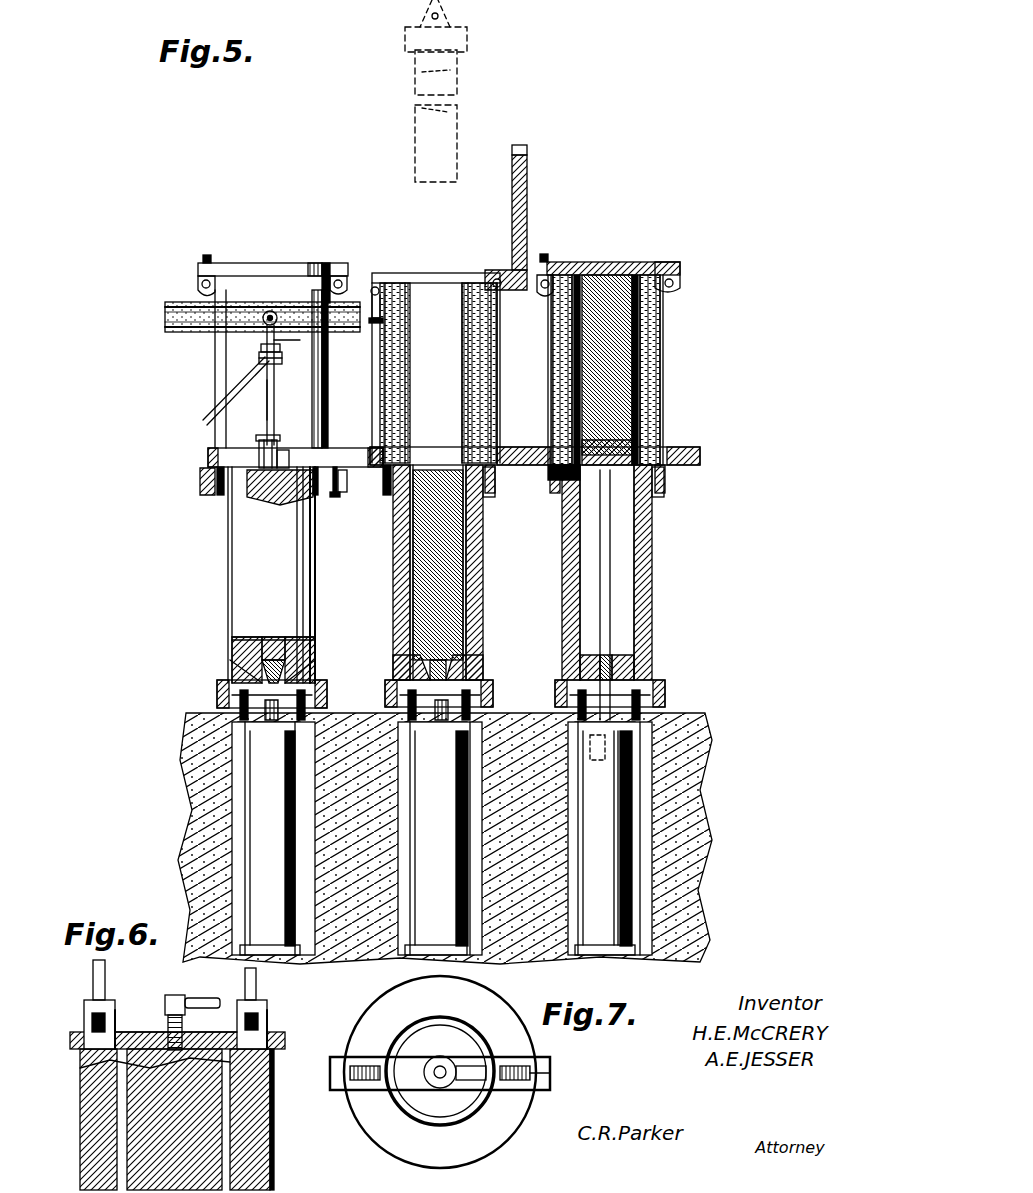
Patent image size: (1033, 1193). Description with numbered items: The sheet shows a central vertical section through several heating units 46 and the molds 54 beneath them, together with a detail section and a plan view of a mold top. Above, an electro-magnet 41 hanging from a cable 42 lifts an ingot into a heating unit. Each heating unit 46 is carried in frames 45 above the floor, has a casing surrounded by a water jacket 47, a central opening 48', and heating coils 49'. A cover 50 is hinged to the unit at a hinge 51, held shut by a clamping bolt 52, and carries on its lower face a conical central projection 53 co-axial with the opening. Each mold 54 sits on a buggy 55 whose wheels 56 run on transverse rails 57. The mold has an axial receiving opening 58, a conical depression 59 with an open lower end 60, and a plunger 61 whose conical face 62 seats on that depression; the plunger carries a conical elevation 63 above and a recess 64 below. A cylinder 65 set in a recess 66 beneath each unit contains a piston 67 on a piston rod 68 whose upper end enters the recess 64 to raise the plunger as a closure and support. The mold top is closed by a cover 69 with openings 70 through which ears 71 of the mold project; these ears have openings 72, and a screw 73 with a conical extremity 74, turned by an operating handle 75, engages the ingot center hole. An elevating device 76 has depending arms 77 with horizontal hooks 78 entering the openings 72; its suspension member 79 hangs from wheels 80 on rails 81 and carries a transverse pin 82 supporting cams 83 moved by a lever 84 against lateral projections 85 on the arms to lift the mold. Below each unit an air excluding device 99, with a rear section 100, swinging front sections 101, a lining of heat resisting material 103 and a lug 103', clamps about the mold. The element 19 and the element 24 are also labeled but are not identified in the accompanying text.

In FIG. 5, the tubular core / piston rod 19 is at (457, 128).
In FIG. 6, the tubular core / piston rod 19 is at (210, 1093).
In FIG. 5, the flange plate 24 is at (437, 462).
In FIG. 6, the flange plate 24 is at (240, 1062).
In FIG. 5, the electro-magnet 41 is at (405, 46).
In FIG. 5, the cable 42 is at (450, 8).
In FIG. 5, the frames 45 is at (340, 458).
In FIG. 5, the heating unit 46 is at (327, 398).
In FIG. 5, the water jacket 47 is at (497, 330).
In FIG. 5, the central opening 48' is at (434, 352).
In FIG. 5, the coils 49' is at (587, 352).
In FIG. 5, the cover 50 is at (527, 183).
In FIG. 5, the hinge 51 is at (347, 280).
In FIG. 5, the clamping bolt 52 is at (207, 255).
In FIG. 5, the conical central projection 53 is at (512, 215).
In FIG. 5, the mold 54 is at (315, 565).
In FIG. 5, the buggy 55 is at (217, 690).
In FIG. 5, the wheels 56 is at (318, 688).
In FIG. 5, the rails 57 is at (190, 730).
In FIG. 5, the axial receiving opening 58 is at (340, 600).
In FIG. 6, the axial receiving opening 58 is at (240, 1120).
In FIG. 7, the axial receiving opening 58 is at (415, 1022).
In FIG. 5, the conical depression 59 is at (480, 672).
In FIG. 5, the open lower end 60 is at (652, 668).
In FIG. 5, the plunger 61 is at (240, 652).
In FIG. 5, the conical face 62 is at (548, 478).
In FIG. 5, the conical elevation 63 is at (272, 640).
In FIG. 5, the recess 64 is at (300, 650).
In FIG. 5, the cylinder 65 is at (680, 740).
In FIG. 5, the recess 66 is at (650, 800).
In FIG. 5, the piston 67 is at (597, 770).
In FIG. 5, the piston rod 68 is at (268, 732).
In FIG. 5, the cover 69 is at (265, 497).
In FIG. 6, the cover 69 is at (140, 1032).
In FIG. 7, the cover 69 is at (425, 1092).
In FIG. 6, the openings 70 is at (262, 1030).
In FIG. 7, the openings 70 is at (352, 1090).
In FIG. 5, the ears 71 is at (262, 444).
In FIG. 6, the ears 71 is at (108, 1000).
In FIG. 7, the ears 71 is at (550, 1073).
In FIG. 6, the openings 72 is at (92, 1022).
In FIG. 7, the openings 72 is at (365, 1066).
In FIG. 6, the screw 73 is at (172, 995).
In FIG. 7, the screw 73 is at (440, 1058).
In FIG. 6, the conical extremity 74 is at (140, 1071).
In FIG. 6, the operating handle 75 is at (200, 998).
In FIG. 7, the operating handle 75 is at (468, 1060).
In FIG. 5, the elevating device 76 is at (262, 398).
In FIG. 5, the depending arms 77 is at (274, 378).
In FIG. 6, the depending arms 77 is at (93, 987).
In FIG. 5, the hooks 78 is at (285, 455).
In FIG. 6, the hooks 78 is at (116, 1012).
In FIG. 5, the suspension member 79 is at (262, 326).
In FIG. 5, the wheels 80 is at (312, 263).
In FIG. 5, the rails 81 is at (256, 300).
In FIG. 5, the transverse pin 82 is at (282, 358).
In FIG. 5, the cams 83 is at (261, 349).
In FIG. 5, the lever 84 is at (203, 421).
In FIG. 5, the lateral projections 85 is at (300, 340).
In FIG. 5, the air excluding device 99 is at (555, 470).
In FIG. 5, the rear section 100 is at (200, 480).
In FIG. 5, the front sections 101 is at (340, 502).
In FIG. 5, the heat resisting material 103 is at (594, 494).
In FIG. 5, the lug 103' is at (356, 481).